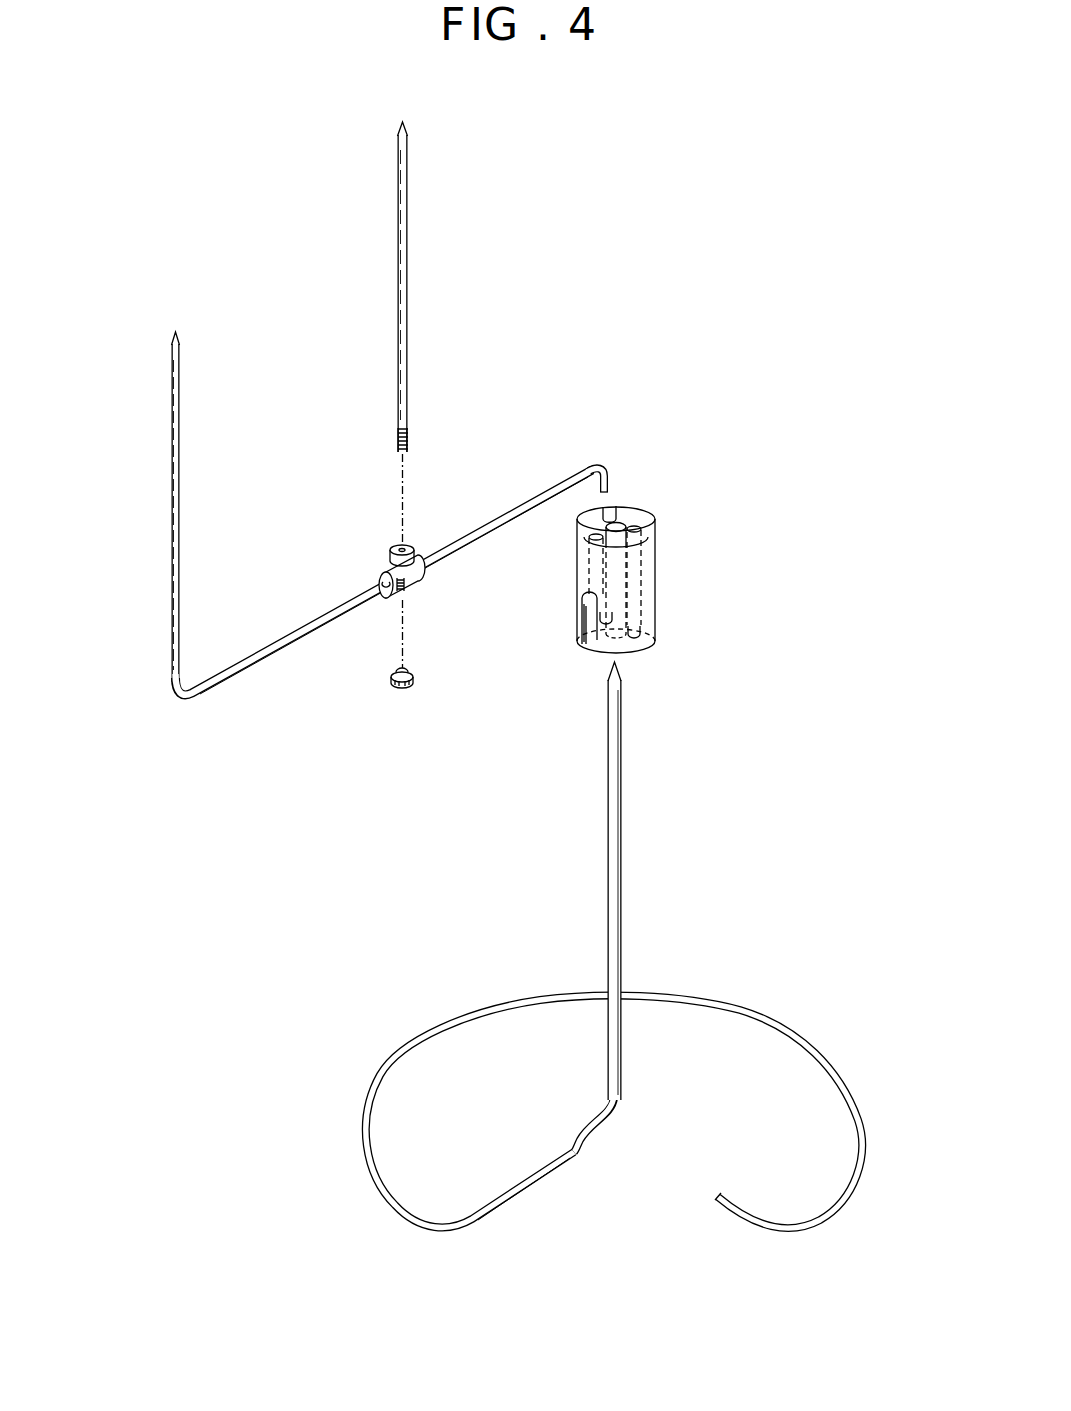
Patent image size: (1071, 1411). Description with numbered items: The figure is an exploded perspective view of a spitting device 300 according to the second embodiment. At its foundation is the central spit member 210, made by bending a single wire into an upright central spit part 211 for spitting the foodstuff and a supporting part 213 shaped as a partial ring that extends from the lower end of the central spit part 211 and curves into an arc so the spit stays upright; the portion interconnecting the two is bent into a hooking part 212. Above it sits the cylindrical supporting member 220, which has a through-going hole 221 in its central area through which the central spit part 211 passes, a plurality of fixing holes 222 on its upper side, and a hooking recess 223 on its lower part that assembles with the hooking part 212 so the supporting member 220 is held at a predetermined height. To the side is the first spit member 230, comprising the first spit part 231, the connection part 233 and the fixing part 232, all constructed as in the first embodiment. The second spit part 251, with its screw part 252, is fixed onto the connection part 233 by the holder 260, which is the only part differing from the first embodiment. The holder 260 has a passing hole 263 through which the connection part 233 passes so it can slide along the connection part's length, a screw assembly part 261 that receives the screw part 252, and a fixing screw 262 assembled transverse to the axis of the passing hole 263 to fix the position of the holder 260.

The spitting device 300 is at (765, 373).
The central spit member 210 is at (822, 957).
The central spit part 211 is at (622, 797).
The hooking part 212 is at (597, 1125).
The supporting part 213 is at (853, 1100).
The supporting member 220 is at (683, 587).
The through-going hole 221 is at (625, 519).
The fixing holes 222 is at (640, 529).
The hooking recess 223 is at (583, 606).
The first spit member 230 is at (158, 490).
The first spit part 231 is at (172, 384).
The fixing part 232 is at (612, 472).
The connection part 233 is at (258, 668).
The second spit part 251 is at (398, 176).
The screw part 252 is at (408, 440).
The holder 260 is at (425, 600).
The screw assembly part 261 is at (392, 553).
The fixing screw 262 is at (412, 680).
The passing hole 263 is at (380, 585).